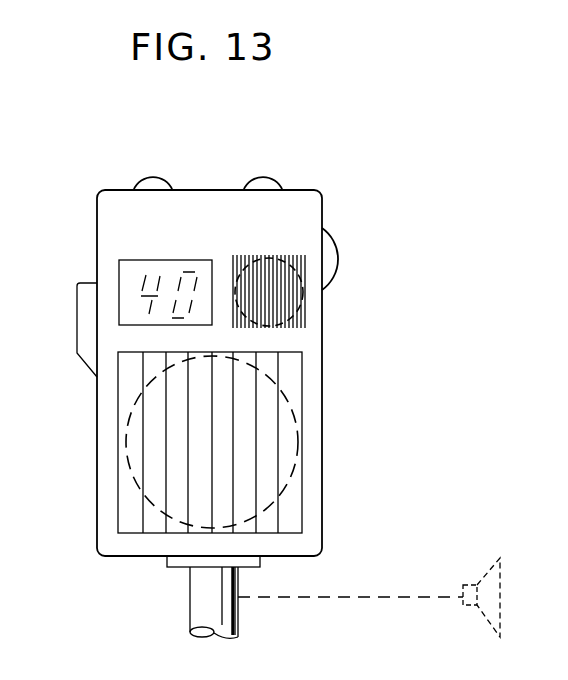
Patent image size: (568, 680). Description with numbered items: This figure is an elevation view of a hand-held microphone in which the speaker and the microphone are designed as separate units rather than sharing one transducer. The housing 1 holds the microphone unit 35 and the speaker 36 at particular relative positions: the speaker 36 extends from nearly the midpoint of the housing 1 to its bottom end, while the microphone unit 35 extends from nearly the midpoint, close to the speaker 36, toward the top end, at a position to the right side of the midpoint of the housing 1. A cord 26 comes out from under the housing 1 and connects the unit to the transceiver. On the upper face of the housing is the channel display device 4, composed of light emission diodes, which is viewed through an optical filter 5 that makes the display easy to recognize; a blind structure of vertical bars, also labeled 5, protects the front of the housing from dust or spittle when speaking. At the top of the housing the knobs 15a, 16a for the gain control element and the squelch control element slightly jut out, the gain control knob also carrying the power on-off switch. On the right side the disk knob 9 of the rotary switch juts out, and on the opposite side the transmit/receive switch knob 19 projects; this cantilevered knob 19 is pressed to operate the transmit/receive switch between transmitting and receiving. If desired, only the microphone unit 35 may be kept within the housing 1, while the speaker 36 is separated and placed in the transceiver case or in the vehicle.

The housing 1 is at (308, 182).
The channel display device 4 is at (145, 288).
The optical filter 5 is at (137, 262).
The disk knob 9 is at (337, 272).
The knob 15a is at (265, 178).
The knob 16a is at (150, 178).
The transmit/receive switch knob 19 is at (77, 325).
The cord 26 is at (232, 612).
The microphone unit 35 is at (297, 253).
The speaker 36 is at (300, 410).